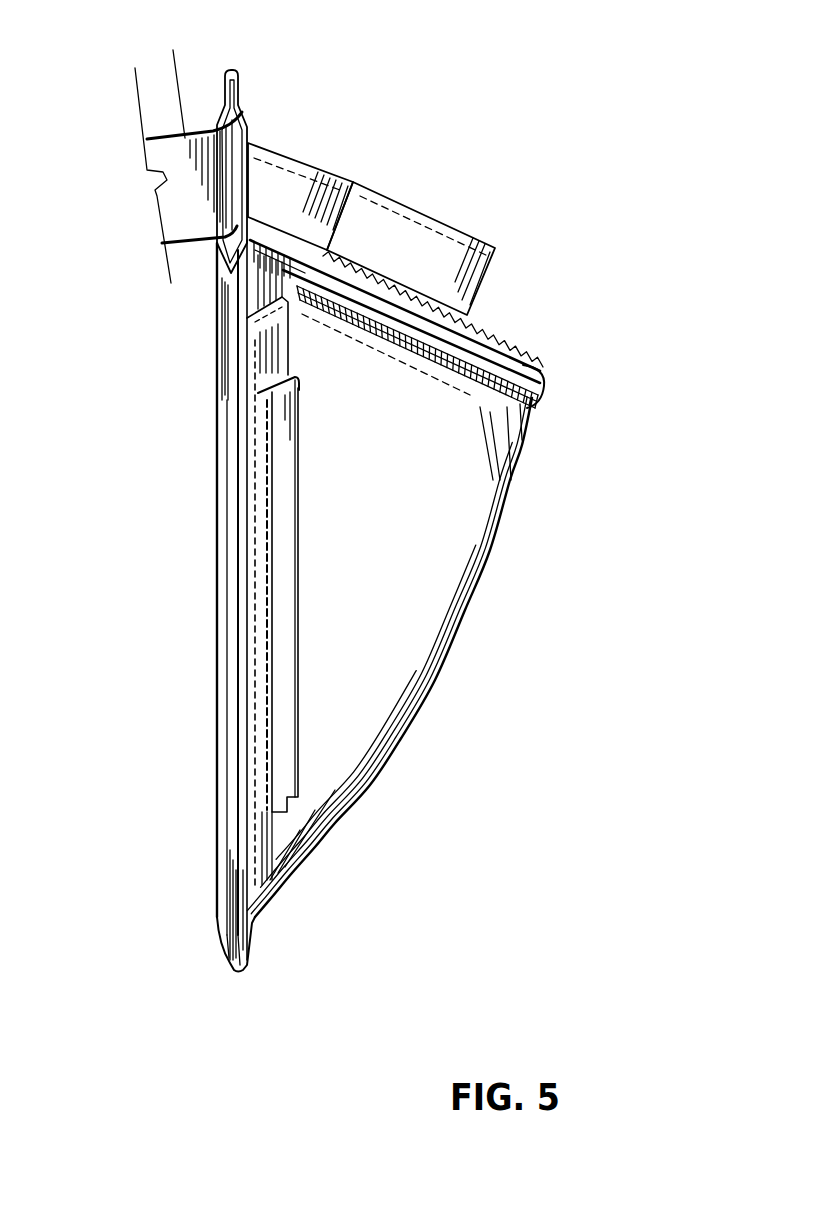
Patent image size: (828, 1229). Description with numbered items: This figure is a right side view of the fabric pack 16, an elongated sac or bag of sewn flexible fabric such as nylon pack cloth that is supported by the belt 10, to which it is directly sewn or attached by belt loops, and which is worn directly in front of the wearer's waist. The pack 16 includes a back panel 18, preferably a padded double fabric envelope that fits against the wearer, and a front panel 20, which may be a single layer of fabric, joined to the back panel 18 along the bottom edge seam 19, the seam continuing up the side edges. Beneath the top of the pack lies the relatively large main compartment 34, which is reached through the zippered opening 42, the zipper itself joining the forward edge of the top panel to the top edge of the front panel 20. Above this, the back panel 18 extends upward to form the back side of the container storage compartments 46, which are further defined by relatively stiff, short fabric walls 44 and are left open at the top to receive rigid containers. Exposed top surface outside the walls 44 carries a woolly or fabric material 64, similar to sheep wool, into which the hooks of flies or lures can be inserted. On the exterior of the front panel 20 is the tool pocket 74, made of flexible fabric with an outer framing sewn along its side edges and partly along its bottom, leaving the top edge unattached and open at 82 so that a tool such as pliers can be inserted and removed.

The belt 10 is at (178, 130).
The fabric pack 16 is at (355, 125).
The back panel 18 is at (215, 803).
The bottom edge seam 19 is at (235, 968).
The front panel 20 is at (375, 760).
The main compartment 34 is at (465, 610).
The zippered opening 42 is at (535, 400).
The fabric walls 44 is at (485, 268).
The container storage compartments 46 is at (297, 153).
The woolly or fabric material 64 is at (530, 345).
The exterior pocket 74 is at (283, 622).
The open top edge 82 is at (265, 378).